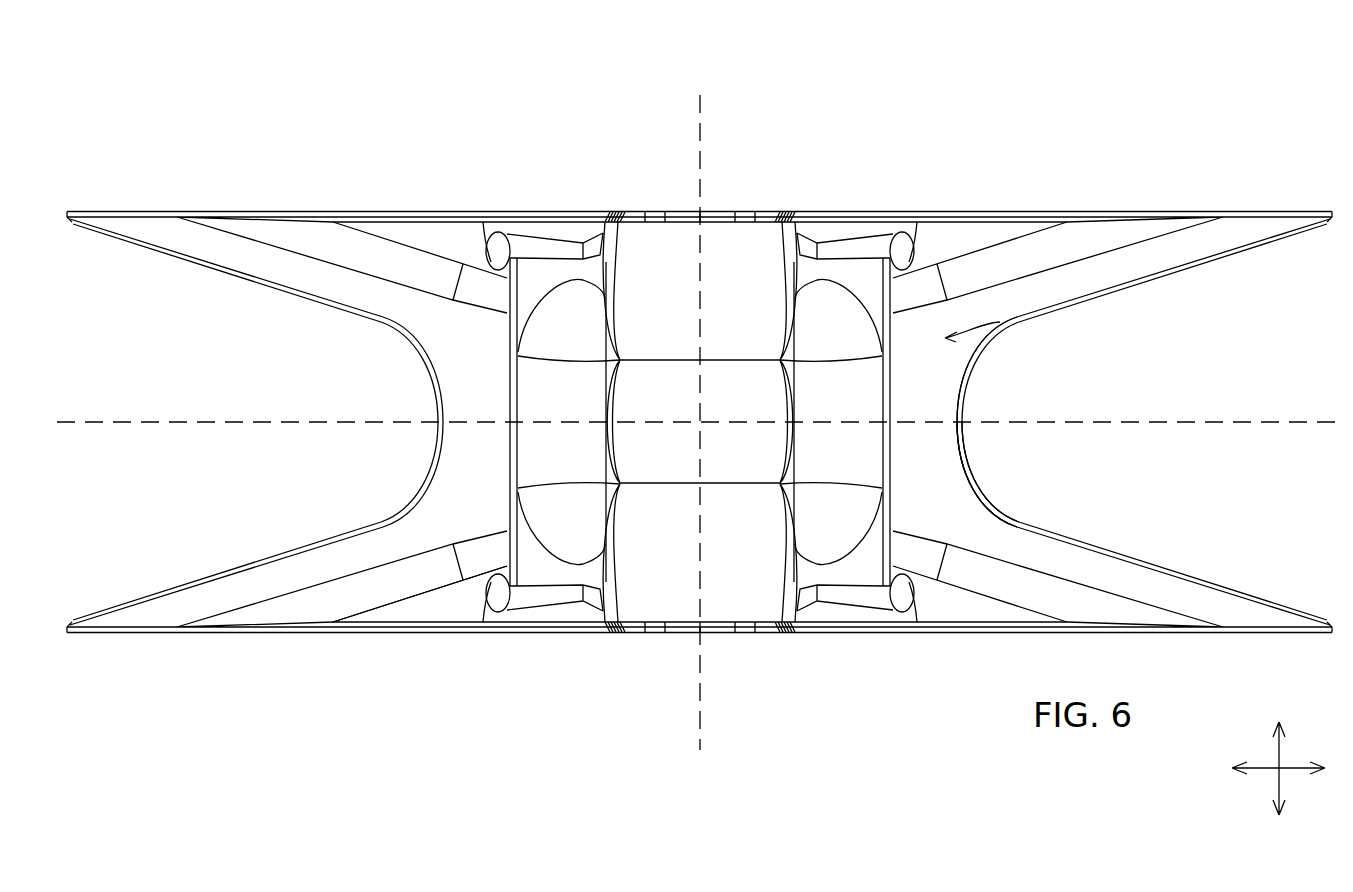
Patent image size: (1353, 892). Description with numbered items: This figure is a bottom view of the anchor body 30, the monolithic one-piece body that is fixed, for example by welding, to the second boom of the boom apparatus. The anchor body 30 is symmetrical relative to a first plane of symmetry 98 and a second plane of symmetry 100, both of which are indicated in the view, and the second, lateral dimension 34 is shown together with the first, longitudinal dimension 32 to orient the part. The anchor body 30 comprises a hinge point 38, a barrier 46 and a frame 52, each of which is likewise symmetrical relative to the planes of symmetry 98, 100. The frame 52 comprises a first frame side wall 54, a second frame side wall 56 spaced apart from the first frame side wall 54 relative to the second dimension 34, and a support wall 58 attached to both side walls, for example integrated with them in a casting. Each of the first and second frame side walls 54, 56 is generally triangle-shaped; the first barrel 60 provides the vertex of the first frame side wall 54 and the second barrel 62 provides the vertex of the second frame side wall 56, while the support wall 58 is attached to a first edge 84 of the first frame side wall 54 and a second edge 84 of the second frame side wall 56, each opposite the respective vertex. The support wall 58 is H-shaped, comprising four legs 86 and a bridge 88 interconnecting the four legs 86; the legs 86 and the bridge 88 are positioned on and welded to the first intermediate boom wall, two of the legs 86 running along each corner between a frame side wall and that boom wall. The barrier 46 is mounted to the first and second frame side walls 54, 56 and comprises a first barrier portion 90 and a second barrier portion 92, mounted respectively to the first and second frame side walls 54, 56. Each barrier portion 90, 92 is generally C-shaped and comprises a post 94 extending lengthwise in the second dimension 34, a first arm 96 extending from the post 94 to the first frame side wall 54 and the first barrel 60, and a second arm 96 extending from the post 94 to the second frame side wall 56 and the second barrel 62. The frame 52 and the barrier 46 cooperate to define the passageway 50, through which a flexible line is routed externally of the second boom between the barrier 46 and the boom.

The anchor body 30 is at (239, 100).
The first, longitudinal dimension 32 is at (1293, 762).
The second, lateral dimension 34 is at (1268, 786).
The hinge point 38 is at (743, 246).
The barrier 46 is at (1008, 318).
The passageway 50 is at (708, 405).
The frame 52 is at (351, 597).
The first frame side wall 54 is at (468, 245).
The second frame side wall 56 is at (447, 585).
The support wall 58 is at (922, 440).
The first barrel 60 is at (670, 272).
The second barrel 62 is at (663, 612).
The edge 84 is at (997, 263).
The legs 86 is at (200, 248).
The bridge 88 is at (490, 348).
The first barrier portion 90 is at (883, 405).
The second barrier portion 92 is at (525, 437).
The post 94 is at (556, 410).
The arms 96 is at (603, 308).
The first plane of symmetry 98 is at (1245, 418).
The second plane of symmetry 100 is at (722, 127).